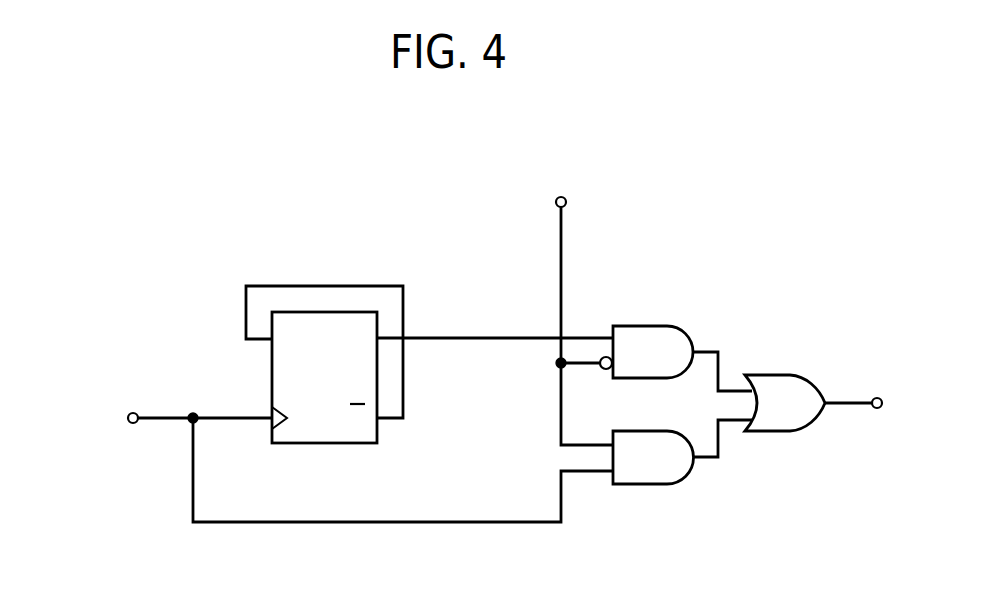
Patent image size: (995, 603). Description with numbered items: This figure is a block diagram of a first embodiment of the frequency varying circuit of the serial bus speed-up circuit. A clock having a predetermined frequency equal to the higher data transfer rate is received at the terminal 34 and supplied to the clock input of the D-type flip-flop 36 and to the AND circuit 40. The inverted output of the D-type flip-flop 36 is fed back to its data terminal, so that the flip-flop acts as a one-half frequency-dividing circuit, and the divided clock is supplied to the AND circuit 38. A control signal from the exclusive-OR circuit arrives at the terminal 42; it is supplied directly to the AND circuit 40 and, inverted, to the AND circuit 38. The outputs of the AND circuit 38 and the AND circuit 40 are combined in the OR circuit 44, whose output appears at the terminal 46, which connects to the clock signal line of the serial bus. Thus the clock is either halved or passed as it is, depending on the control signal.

The terminal 34 is at (135, 408).
The D-type flip-flop 36 is at (330, 444).
The AND circuit 38 is at (682, 325).
The AND circuit 40 is at (683, 481).
The terminal 42 is at (566, 203).
The OR circuit 44 is at (793, 375).
The terminal 46 is at (877, 397).